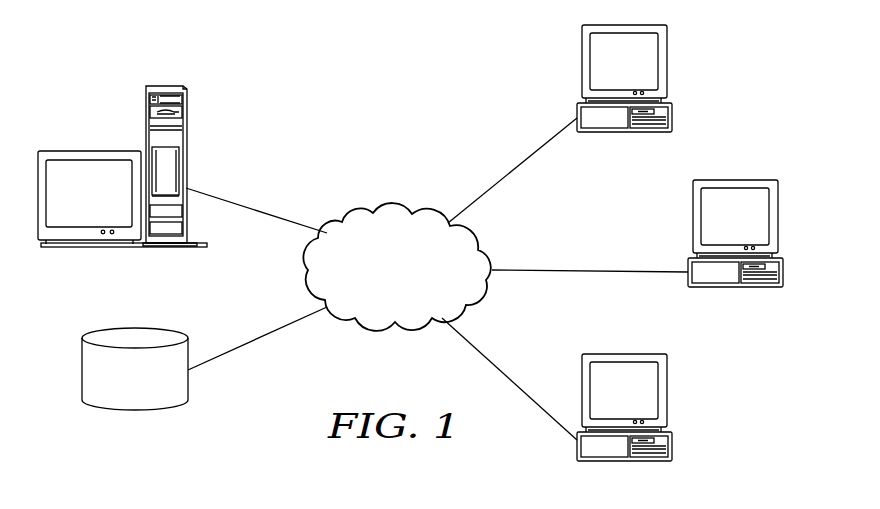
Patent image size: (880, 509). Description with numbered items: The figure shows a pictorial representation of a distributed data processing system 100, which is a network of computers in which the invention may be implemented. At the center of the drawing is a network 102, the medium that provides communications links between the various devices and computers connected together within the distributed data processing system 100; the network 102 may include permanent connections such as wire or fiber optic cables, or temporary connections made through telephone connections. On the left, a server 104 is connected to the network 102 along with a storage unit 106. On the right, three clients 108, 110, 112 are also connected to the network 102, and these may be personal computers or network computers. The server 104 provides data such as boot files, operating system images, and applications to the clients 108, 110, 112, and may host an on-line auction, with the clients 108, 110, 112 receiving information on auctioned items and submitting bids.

The distributed data processing system 100 is at (278, 71).
The network 102 is at (419, 296).
The server 104 is at (146, 110).
The storage unit 106 is at (82, 368).
The client 108 is at (667, 70).
The client 110 is at (778, 222).
The client 112 is at (667, 396).